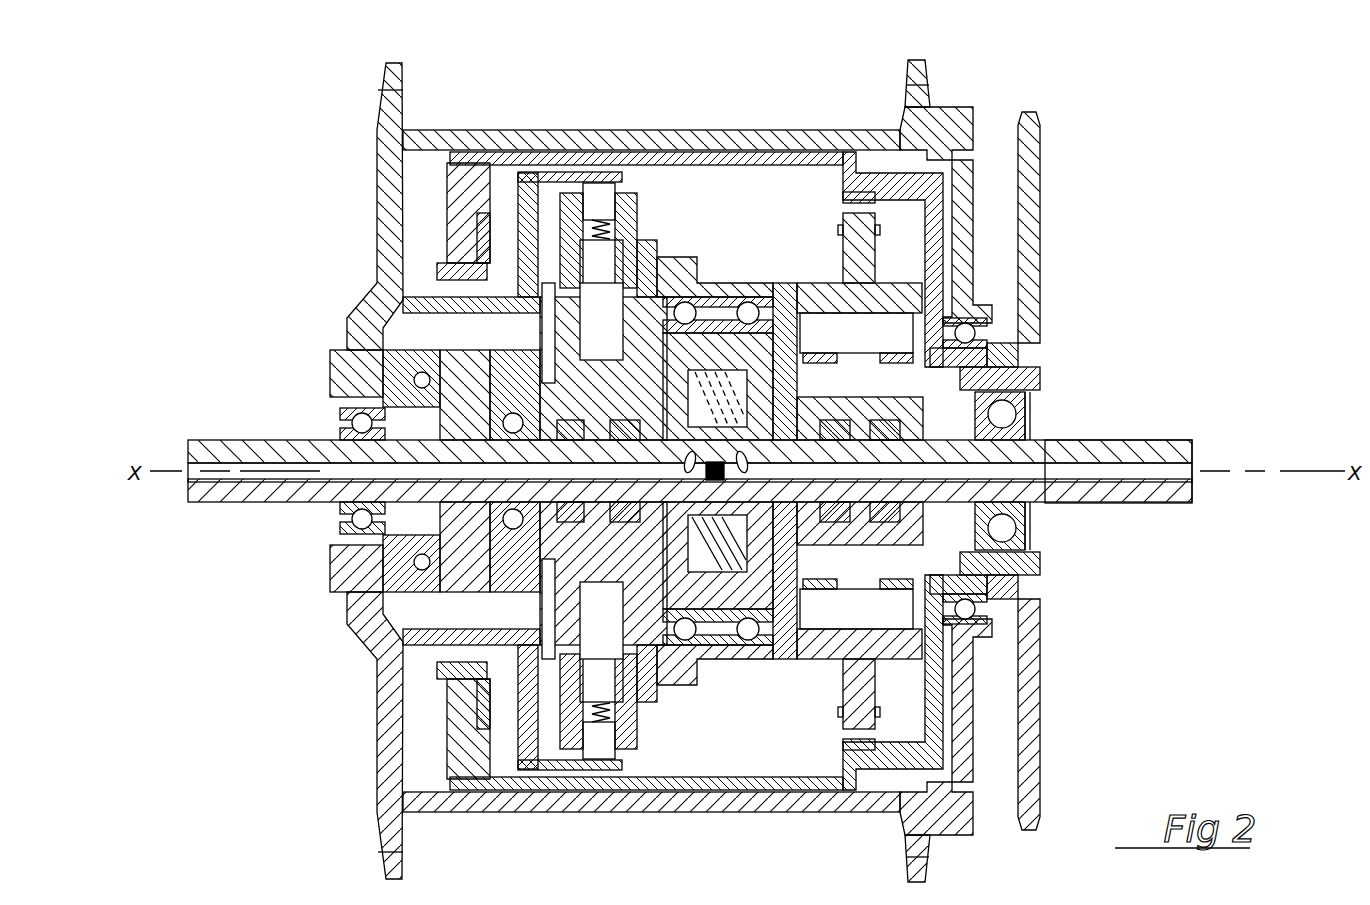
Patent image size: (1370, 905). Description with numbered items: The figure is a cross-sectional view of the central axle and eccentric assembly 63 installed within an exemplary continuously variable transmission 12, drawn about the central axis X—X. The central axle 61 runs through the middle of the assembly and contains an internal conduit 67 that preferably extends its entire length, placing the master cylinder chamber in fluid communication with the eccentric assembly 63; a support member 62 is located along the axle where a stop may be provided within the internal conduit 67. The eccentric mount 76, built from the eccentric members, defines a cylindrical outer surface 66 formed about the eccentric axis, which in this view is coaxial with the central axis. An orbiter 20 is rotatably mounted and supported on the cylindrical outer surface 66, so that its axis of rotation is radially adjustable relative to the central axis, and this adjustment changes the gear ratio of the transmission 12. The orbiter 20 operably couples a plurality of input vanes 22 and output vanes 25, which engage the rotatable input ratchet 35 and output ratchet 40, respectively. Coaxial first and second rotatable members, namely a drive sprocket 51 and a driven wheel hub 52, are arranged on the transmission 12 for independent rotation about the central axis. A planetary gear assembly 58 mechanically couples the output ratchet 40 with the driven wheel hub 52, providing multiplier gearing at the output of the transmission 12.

The continuously variable transmission 12 is at (312, 96).
The orbiter 20 is at (709, 276).
The input vanes 22 is at (845, 236).
The output vanes 25 is at (630, 205).
The input ratchet 35 is at (846, 178).
The output ratchet 40 is at (602, 182).
The drive sprocket 51 is at (1030, 712).
The driven wheel hub 52 is at (920, 76).
The planetary gear assembly 58 is at (427, 255).
The central axle 61 is at (1117, 506).
The support member 62 is at (800, 370).
The eccentric assembly 63 is at (721, 310).
The cylindrical outer surface 66 is at (722, 640).
The internal conduit 67 is at (1096, 447).
The eccentric mount 76 is at (652, 347).